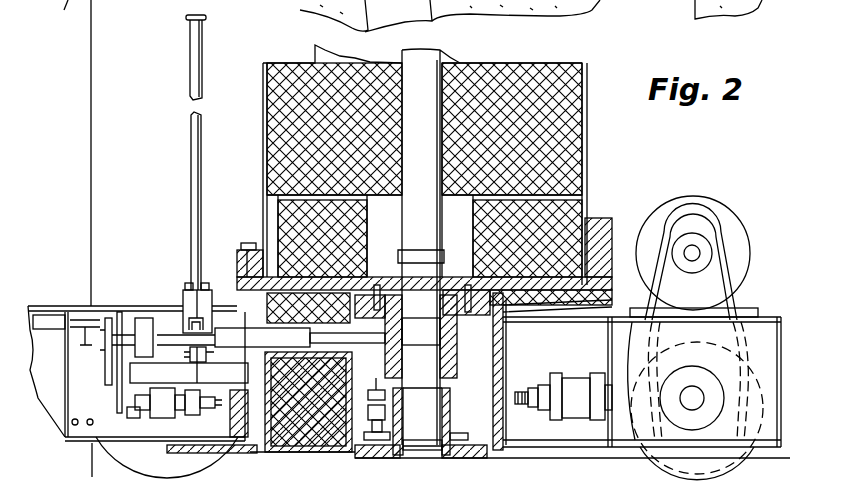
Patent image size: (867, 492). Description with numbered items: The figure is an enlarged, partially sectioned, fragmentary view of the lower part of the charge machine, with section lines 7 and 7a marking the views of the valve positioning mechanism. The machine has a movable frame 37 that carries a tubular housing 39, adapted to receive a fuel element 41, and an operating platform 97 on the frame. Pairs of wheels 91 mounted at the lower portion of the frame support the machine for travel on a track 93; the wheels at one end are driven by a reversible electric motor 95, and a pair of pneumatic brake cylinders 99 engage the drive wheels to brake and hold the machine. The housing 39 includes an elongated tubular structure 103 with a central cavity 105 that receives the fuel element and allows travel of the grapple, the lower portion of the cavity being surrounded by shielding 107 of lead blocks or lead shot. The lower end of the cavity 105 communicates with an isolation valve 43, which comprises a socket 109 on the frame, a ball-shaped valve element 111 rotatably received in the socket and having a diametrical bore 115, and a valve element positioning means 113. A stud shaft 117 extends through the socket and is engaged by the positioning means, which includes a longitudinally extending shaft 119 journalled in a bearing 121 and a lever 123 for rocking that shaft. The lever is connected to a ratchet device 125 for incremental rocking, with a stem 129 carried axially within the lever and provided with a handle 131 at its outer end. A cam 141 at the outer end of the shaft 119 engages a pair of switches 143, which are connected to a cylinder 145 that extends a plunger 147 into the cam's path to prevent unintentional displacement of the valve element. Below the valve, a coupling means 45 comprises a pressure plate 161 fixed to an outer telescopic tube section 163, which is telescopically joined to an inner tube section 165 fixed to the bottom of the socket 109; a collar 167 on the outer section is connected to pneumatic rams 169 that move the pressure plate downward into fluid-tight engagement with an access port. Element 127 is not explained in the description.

The section line 7 is at (95, 463).
The section line 7a is at (210, 263).
The frame 37 is at (621, 299).
The tubular housing 39 is at (588, 128).
The fuel element 41 is at (429, 254).
The isolation valve 43 is at (480, 346).
The coupling means 45 is at (428, 468).
The wheels 91 is at (746, 470).
The track 93 is at (175, 470).
The reversible electric motor 95 is at (731, 232).
The operating platform 97 is at (46, 306).
The pneumatic brake cylinders 99 is at (576, 386).
The elongated tubular structure 103 is at (588, 82).
The central cavity 105 is at (433, 90).
The shielding 107 is at (580, 166).
The socket 109 is at (458, 364).
The valve element 111 is at (444, 342).
The valve element positioning means 113 is at (176, 301).
The diametrical bore 115 is at (400, 358).
The stud shaft 117 is at (372, 345).
The shaft 119 is at (193, 330).
The bearing 121 is at (140, 330).
The lever 123 is at (196, 212).
The ratchet device 125 is at (200, 348).
The plate 127 is at (95, 380).
The stem 129 is at (203, 116).
The handle 131 is at (210, 19).
The cam 141 is at (115, 397).
The switches 143 is at (110, 316).
The cylinder 145 is at (168, 406).
The plunger 147 is at (133, 413).
The pressure plate 161 is at (463, 456).
The outer telescopic tube section 163 is at (447, 430).
The inner telescopic tube section 165 is at (405, 428).
The collar 167 is at (478, 432).
The pneumatic rams 169 is at (372, 420).